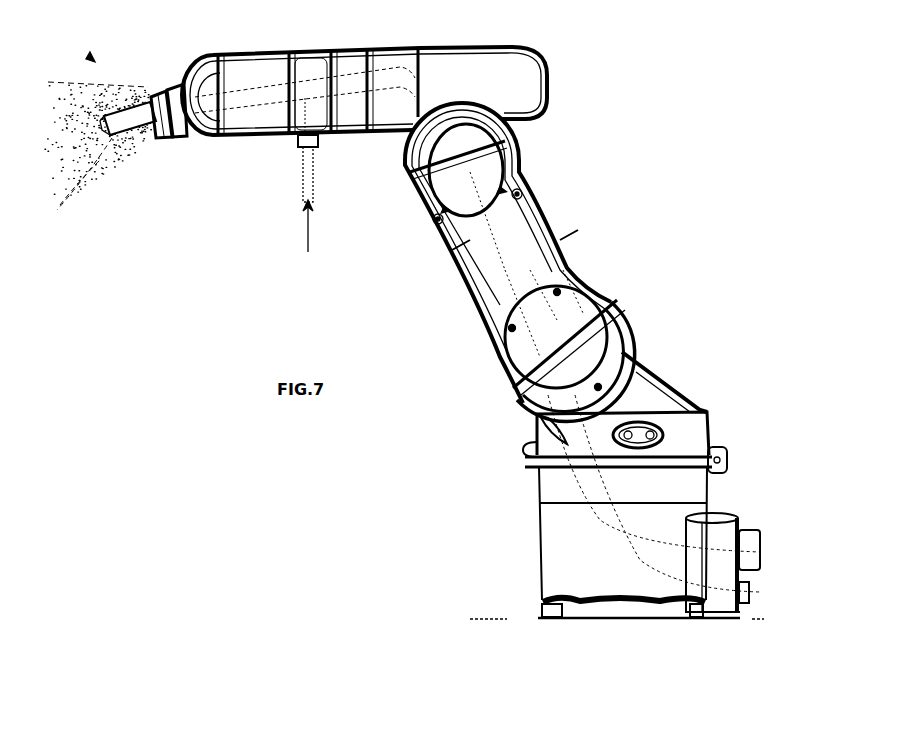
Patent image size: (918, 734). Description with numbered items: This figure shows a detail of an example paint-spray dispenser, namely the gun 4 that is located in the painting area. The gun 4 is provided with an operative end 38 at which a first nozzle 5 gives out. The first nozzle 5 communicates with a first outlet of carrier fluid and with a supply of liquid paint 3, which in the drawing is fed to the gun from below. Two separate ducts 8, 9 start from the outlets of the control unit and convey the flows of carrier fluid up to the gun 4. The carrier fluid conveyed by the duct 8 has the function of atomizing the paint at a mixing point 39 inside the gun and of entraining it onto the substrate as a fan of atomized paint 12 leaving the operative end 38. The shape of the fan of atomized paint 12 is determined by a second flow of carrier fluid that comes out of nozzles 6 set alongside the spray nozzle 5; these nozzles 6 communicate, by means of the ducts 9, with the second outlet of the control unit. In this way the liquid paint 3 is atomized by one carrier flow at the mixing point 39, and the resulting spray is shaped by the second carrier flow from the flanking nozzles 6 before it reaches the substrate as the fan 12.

The supply of liquid paint 3 is at (302, 190).
The gun 4 is at (541, 211).
The first nozzle 5 is at (106, 128).
The nozzles 6 is at (153, 96).
The duct 8 is at (750, 592).
The ducts 9 is at (756, 553).
The fan of atomized paint 12 is at (65, 178).
The operative end 38 is at (91, 57).
The mixing point 39 is at (306, 96).